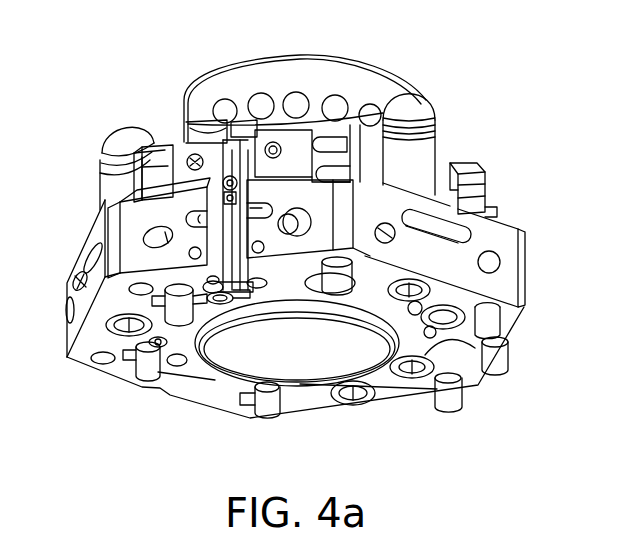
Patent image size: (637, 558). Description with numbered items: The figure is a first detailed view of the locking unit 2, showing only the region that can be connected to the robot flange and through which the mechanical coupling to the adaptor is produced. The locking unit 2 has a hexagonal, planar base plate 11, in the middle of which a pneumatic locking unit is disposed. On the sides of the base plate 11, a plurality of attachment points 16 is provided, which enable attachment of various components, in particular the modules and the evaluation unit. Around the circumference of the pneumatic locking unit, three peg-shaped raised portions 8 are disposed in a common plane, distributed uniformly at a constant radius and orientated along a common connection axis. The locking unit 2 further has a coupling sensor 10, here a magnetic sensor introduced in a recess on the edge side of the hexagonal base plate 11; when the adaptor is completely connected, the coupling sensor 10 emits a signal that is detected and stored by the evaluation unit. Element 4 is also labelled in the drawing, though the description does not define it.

The locking unit 2 is at (509, 59).
The valve body 4 is at (110, 193).
The peg-shaped raised portions 8 is at (101, 144).
The coupling sensor 10 is at (213, 273).
The base plate 11 is at (507, 270).
The attachment points 16 is at (385, 243).